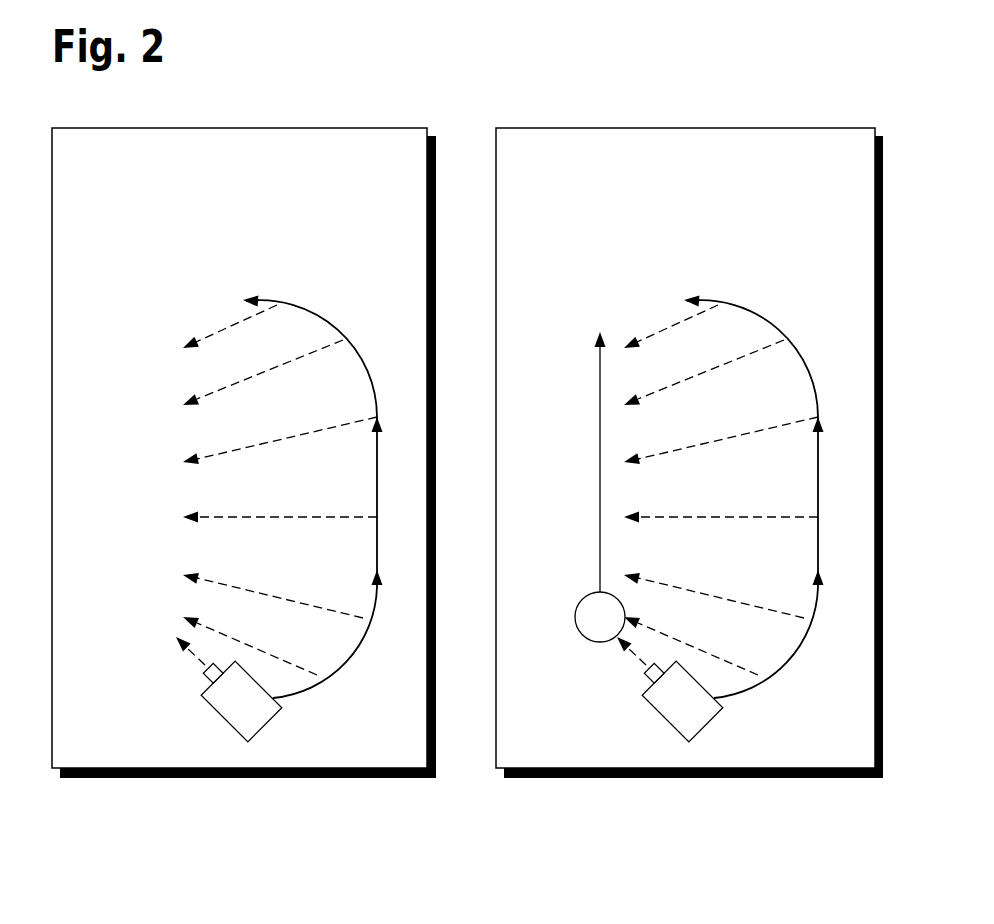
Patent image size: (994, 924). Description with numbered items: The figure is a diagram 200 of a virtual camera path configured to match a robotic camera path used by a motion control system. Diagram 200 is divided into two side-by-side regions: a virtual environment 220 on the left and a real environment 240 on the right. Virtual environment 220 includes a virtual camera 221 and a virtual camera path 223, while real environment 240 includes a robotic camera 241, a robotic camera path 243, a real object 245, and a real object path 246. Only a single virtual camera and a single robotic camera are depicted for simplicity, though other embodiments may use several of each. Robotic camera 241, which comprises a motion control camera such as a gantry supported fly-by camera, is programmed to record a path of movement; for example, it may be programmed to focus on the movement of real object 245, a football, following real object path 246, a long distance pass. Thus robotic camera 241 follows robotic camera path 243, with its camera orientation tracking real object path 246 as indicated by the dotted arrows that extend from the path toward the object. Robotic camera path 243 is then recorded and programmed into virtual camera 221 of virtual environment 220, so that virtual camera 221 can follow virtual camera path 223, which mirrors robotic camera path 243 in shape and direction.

The diagram 200 is at (797, 84).
The virtual environment 220 is at (360, 162).
The virtual camera 221 is at (250, 749).
The virtual camera path 223 is at (345, 263).
The real environment 240 is at (798, 162).
The robotic camera 241 is at (687, 749).
The robotic camera path 243 is at (788, 263).
The real object 245 is at (570, 661).
The real object path 246 is at (600, 450).